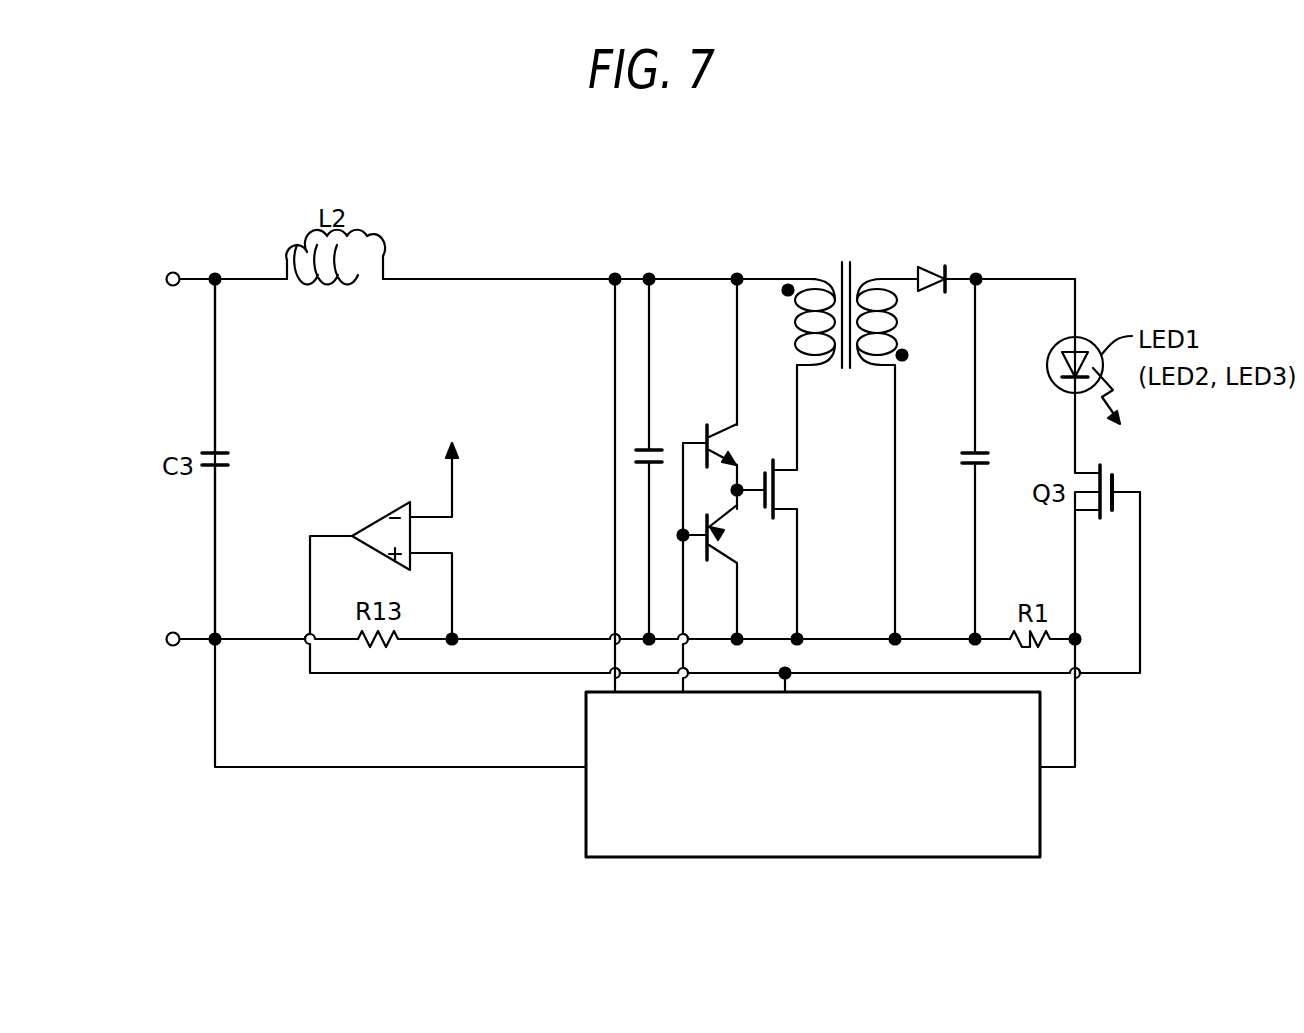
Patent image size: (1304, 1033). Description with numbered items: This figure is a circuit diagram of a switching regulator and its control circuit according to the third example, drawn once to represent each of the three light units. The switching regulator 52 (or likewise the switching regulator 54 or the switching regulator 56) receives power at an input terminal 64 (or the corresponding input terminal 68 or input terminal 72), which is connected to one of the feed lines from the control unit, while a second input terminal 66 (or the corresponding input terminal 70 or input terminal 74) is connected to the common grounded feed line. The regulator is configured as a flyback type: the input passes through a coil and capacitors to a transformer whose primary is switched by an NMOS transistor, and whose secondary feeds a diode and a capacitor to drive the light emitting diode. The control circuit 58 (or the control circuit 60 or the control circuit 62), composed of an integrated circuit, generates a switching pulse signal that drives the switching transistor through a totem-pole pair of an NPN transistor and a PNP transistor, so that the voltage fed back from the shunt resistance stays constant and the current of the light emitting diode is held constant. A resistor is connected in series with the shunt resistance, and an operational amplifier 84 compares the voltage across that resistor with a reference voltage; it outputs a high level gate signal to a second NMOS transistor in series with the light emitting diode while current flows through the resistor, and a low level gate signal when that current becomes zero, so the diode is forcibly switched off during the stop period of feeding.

The input terminal 64 is at (223, 226).
The input terminal 68 is at (223, 226).
The input terminal 72 is at (173, 271).
The input terminal 66 is at (234, 728).
The input terminal 70 is at (234, 728).
The input terminal 74 is at (173, 647).
The switching regulator 52 is at (843, 432).
The switching regulator 54 is at (843, 432).
The switching regulator 56 is at (670, 263).
The control circuit 58 is at (906, 763).
The control circuit 60 is at (906, 763).
The control circuit 62 is at (1041, 813).
The operational amplifier 84 is at (385, 515).